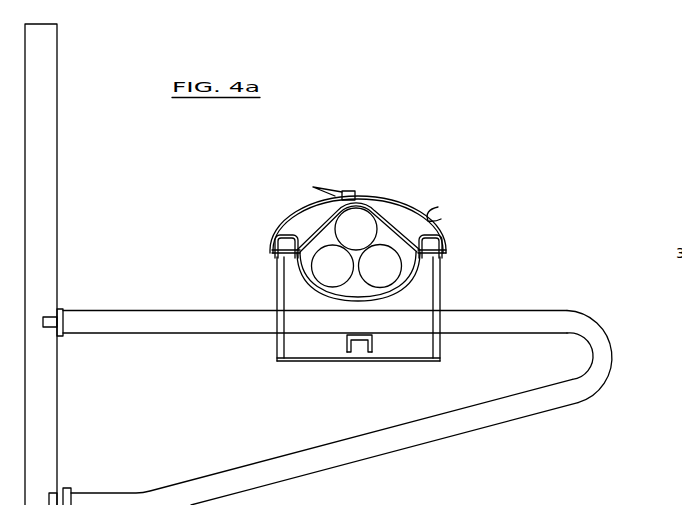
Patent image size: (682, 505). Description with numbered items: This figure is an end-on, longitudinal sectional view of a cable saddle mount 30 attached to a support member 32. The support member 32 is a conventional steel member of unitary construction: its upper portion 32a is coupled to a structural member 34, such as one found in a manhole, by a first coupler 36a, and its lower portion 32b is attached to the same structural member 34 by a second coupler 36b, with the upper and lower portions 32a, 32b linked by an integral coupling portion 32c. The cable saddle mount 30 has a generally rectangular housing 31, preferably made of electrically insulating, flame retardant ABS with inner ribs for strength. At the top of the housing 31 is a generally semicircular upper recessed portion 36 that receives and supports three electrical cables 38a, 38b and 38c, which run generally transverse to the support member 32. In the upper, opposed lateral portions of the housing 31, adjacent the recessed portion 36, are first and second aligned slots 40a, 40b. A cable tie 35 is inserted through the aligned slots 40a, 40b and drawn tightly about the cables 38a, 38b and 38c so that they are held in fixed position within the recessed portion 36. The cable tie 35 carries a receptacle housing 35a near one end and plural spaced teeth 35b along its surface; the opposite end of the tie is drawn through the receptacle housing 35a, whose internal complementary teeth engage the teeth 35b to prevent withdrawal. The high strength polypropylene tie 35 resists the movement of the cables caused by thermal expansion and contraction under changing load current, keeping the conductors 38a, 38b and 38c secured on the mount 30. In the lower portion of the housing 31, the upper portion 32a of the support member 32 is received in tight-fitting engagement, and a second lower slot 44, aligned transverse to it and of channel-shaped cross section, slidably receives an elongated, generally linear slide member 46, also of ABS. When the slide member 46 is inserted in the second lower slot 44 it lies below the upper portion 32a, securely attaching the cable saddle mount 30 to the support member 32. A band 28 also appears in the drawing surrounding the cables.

The retaining band 28 is at (443, 268).
The cable saddle mount 30 is at (371, 221).
The housing 31 is at (396, 323).
The support member 32 is at (358, 361).
The upper portion of support member 32a is at (144, 318).
The lower portion of support member 32b is at (447, 428).
The integral coupling portion 32c is at (598, 343).
The structural member 34 is at (47, 147).
The cable tie 35 is at (363, 182).
The receptacle housing 35a is at (344, 193).
The teeth 35b is at (446, 218).
The upper recessed portion 36 is at (362, 314).
The first coupler 36a is at (61, 309).
The second coupler 36b is at (65, 490).
The electrical cable 38a is at (365, 218).
The electrical cable 38b is at (320, 276).
The electrical cable 38c is at (396, 276).
The first aligned slot 40a is at (277, 263).
The second aligned slot 40b is at (443, 260).
The second lower slot 44 is at (372, 343).
The slide member 46 is at (353, 352).